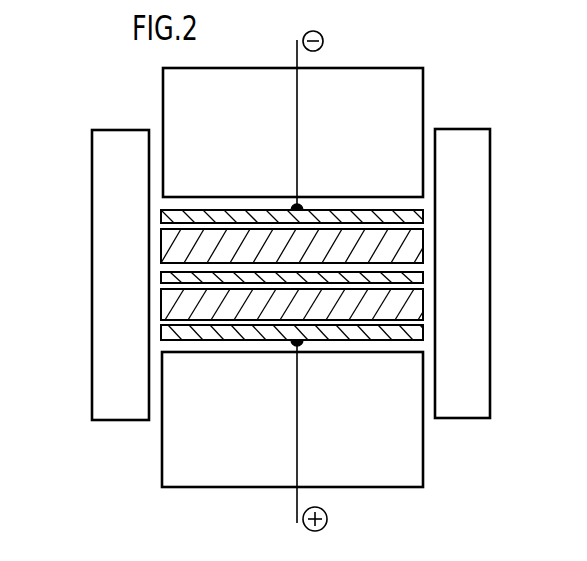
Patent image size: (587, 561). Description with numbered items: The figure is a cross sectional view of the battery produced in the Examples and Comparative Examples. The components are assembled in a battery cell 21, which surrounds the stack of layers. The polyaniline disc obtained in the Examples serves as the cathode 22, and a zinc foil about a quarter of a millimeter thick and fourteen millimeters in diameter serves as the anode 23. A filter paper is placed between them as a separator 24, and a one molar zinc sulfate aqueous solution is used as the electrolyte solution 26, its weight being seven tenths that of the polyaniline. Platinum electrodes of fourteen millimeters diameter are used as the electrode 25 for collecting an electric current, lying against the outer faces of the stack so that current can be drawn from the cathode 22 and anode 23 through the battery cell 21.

The battery cell 21 is at (452, 142).
The cathode 22 is at (410, 302).
The anode 23 is at (410, 245).
The separator 24 is at (410, 278).
The electrode for collecting an electric current 25 is at (165, 205).
The electrolyte solution 26 is at (163, 268).